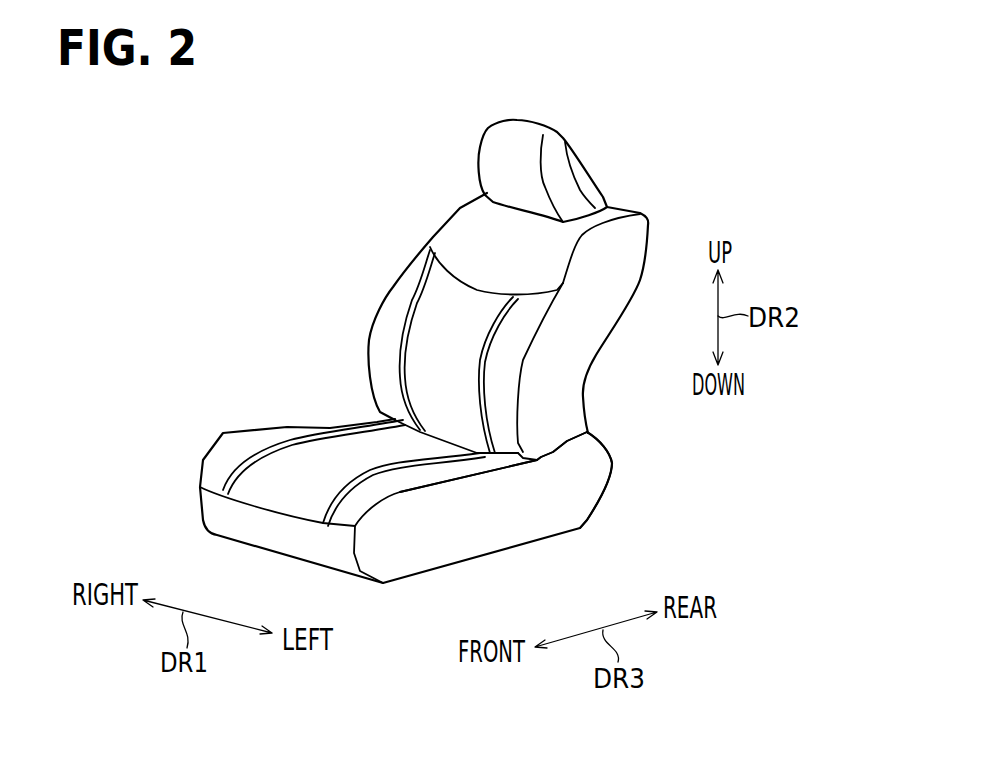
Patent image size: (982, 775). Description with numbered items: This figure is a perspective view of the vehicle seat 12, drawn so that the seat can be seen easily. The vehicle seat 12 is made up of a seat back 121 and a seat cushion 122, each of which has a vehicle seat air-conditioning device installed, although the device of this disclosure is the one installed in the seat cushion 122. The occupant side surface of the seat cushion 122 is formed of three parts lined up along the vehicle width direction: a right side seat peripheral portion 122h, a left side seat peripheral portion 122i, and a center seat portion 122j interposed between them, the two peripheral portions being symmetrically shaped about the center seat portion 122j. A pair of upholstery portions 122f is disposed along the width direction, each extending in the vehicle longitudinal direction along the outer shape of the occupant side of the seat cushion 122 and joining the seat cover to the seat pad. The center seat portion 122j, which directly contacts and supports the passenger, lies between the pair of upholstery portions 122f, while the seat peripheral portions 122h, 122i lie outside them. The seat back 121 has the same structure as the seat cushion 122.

The vehicle seat 12 is at (388, 145).
The seat back 121 is at (397, 280).
The seat cushion 122 is at (210, 430).
The right side seat peripheral portion 122h is at (257, 440).
The upholstery portion 122f is at (337, 437).
The center seat portion 122j is at (353, 458).
The left side seat peripheral portion 122i is at (493, 467).